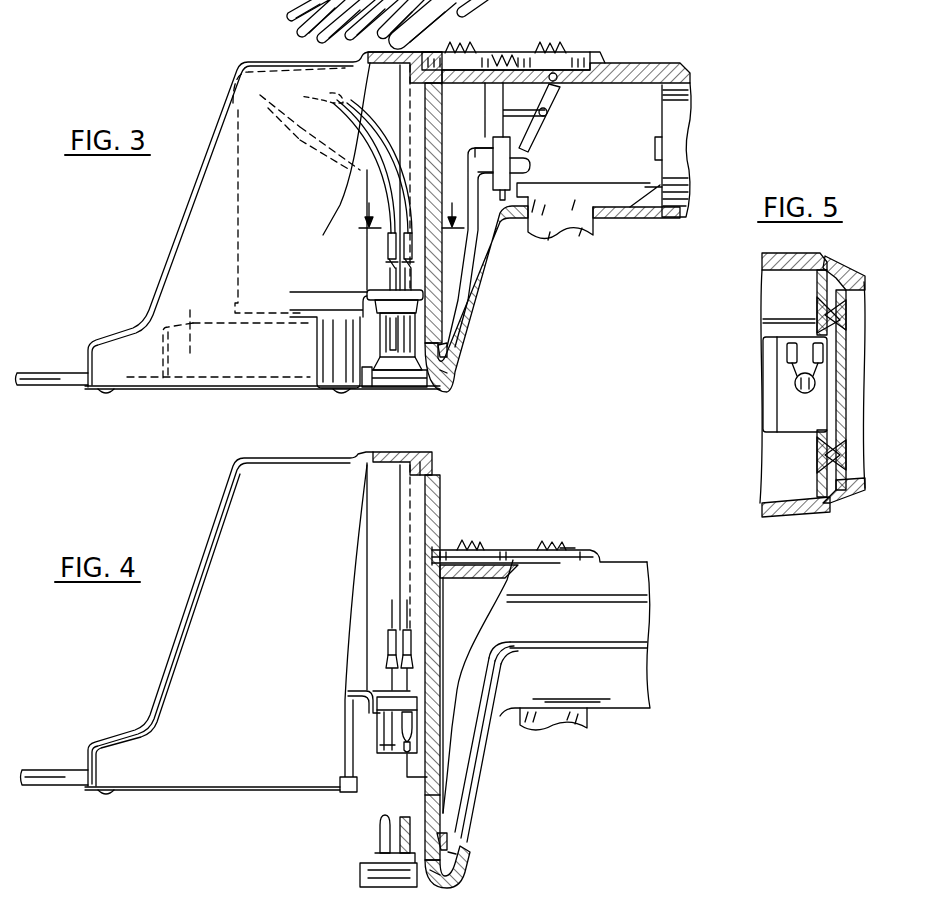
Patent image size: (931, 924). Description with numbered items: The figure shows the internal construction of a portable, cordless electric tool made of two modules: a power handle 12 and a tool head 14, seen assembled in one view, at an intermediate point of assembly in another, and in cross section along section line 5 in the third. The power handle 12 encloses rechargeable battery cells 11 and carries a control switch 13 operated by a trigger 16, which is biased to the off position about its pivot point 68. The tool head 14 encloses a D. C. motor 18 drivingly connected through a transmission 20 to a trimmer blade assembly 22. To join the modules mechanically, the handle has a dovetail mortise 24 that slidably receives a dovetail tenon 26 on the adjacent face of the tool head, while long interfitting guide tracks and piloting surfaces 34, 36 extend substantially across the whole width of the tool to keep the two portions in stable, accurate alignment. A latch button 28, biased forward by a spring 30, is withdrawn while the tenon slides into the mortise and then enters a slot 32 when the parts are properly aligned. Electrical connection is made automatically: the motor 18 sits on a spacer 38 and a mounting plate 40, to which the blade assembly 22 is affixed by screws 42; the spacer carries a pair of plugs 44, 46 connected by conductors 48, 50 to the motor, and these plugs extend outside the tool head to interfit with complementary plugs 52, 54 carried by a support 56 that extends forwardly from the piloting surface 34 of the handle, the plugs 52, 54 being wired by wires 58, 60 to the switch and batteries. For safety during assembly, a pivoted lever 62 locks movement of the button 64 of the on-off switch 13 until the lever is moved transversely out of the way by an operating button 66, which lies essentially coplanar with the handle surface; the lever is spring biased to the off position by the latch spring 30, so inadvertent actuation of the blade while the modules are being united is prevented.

In FIG. 3, the section line 5— 5 is at (411, 229).
In FIG. 3, the rechargeable battery cells 11 is at (675, 118).
In FIG. 3, the power handle 12 is at (667, 66).
In FIG. 4, the power handle 12 is at (627, 577).
In FIG. 5, the power handle 12 is at (853, 500).
In FIG. 3, the control switch 13 is at (500, 147).
In FIG. 3, the tool head 14 is at (218, 152).
In FIG. 4, the tool head 14 is at (232, 528).
In FIG. 5, the tool head 14 is at (787, 517).
In FIG. 3, the trigger 16 is at (557, 217).
In FIG. 4, the trigger 16 is at (553, 720).
In FIG. 3, the D. C. motor 18 is at (225, 95).
In FIG. 3, the transmission 20 is at (187, 352).
In FIG. 3, the trimmer blade assembly 22 is at (55, 372).
In FIG. 4, the trimmer blade assembly 22 is at (58, 770).
In FIG. 5, the dovetail mortise 24 is at (860, 287).
In FIG. 5, the dovetail tenon 26 is at (810, 320).
In FIG. 3, the latch button 28 is at (468, 50).
In FIG. 4, the latch button 28 is at (488, 535).
In FIG. 3, the spring 30 is at (528, 52).
In FIG. 4, the spring 30 is at (547, 545).
In FIG. 4, the slot 32 is at (430, 465).
In FIG. 4, the piloting surface 34 is at (425, 795).
In FIG. 5, the piloting surface 34 is at (828, 268).
In FIG. 4, the piloting surface 36 is at (432, 510).
In FIG. 5, the piloting surface 36 is at (830, 307).
In FIG. 3, the spacer 38 is at (333, 313).
In FIG. 4, the spacer 38 is at (366, 690).
In FIG. 5, the spacer 38 is at (793, 410).
In FIG. 3, the mounting plate 40 is at (190, 310).
In FIG. 3, the screws 42 is at (112, 392).
In FIG. 4, the screws 42 is at (108, 792).
In FIG. 3, the plug 44 is at (387, 335).
In FIG. 4, the plug 44 is at (385, 738).
In FIG. 4, the plug 46 is at (412, 725).
In FIG. 3, the conductor 48 is at (388, 246).
In FIG. 4, the conductor 48 is at (388, 643).
In FIG. 5, the conductor 48 is at (790, 353).
In FIG. 3, the conductor 50 is at (412, 250).
In FIG. 4, the conductor 50 is at (411, 640).
In FIG. 5, the conductor 50 is at (823, 353).
In FIG. 4, the plug 52 is at (377, 840).
In FIG. 3, the plug 54 is at (407, 330).
In FIG. 4, the plug 54 is at (440, 878).
In FIG. 3, the support 56 is at (370, 390).
In FIG. 3, the wire 58 is at (447, 347).
In FIG. 4, the wire 58 is at (440, 827).
In FIG. 3, the wire 60 is at (445, 373).
In FIG. 4, the wire 60 is at (450, 847).
In FIG. 3, the pivoted lever 62 is at (533, 135).
In FIG. 3, the button 64 is at (532, 166).
In FIG. 3, the operating button 66 is at (585, 48).
In FIG. 4, the operating button 66 is at (560, 540).
In FIG. 3, the pivot point 68 is at (643, 188).